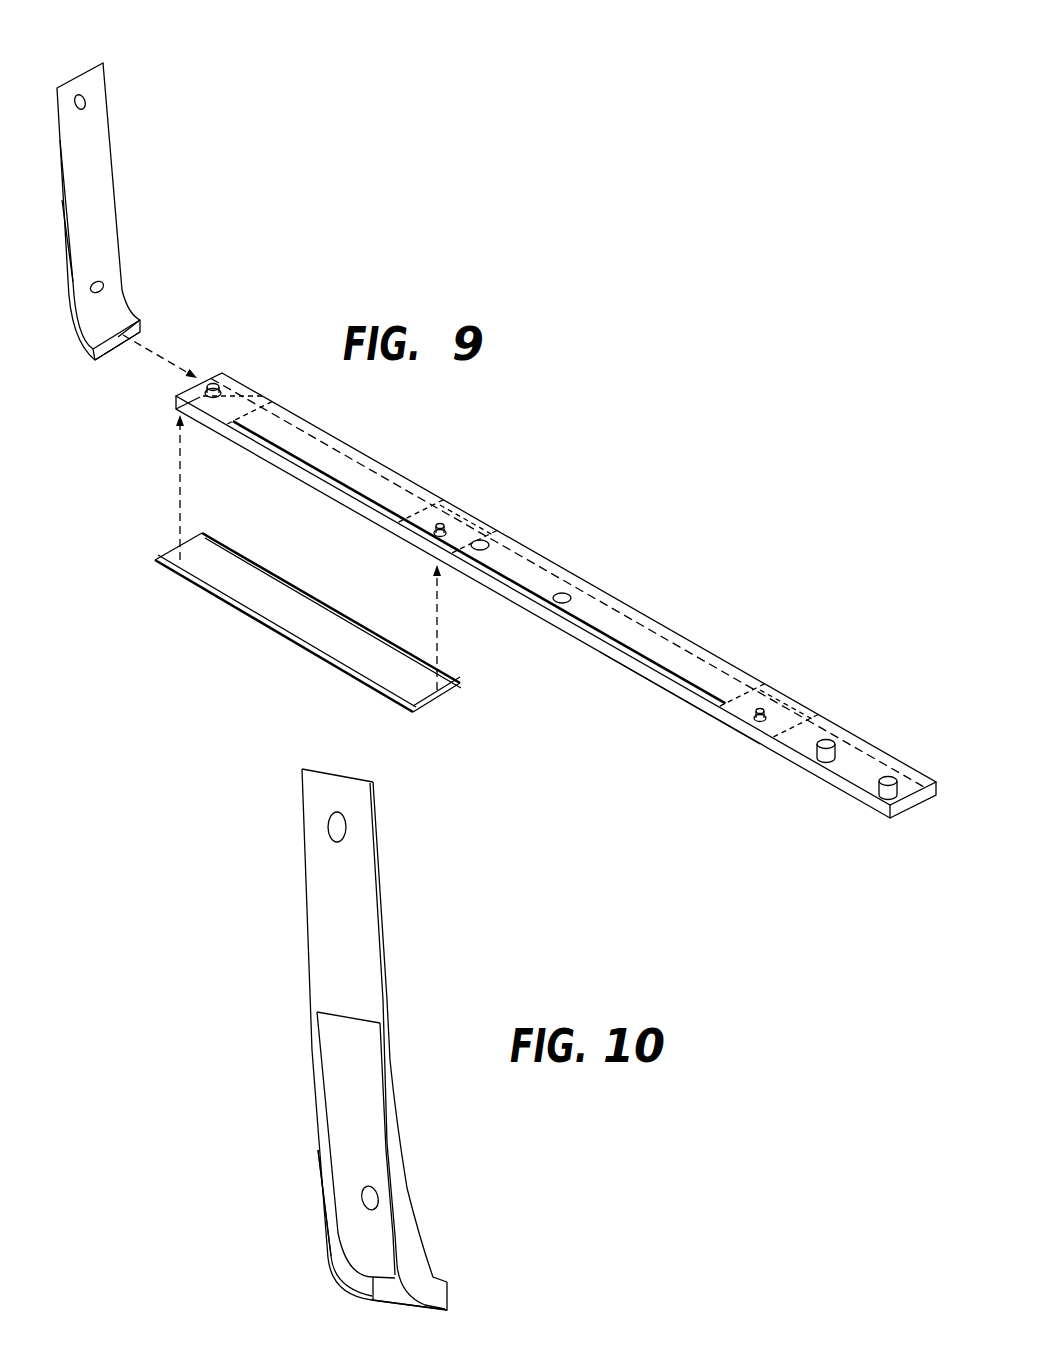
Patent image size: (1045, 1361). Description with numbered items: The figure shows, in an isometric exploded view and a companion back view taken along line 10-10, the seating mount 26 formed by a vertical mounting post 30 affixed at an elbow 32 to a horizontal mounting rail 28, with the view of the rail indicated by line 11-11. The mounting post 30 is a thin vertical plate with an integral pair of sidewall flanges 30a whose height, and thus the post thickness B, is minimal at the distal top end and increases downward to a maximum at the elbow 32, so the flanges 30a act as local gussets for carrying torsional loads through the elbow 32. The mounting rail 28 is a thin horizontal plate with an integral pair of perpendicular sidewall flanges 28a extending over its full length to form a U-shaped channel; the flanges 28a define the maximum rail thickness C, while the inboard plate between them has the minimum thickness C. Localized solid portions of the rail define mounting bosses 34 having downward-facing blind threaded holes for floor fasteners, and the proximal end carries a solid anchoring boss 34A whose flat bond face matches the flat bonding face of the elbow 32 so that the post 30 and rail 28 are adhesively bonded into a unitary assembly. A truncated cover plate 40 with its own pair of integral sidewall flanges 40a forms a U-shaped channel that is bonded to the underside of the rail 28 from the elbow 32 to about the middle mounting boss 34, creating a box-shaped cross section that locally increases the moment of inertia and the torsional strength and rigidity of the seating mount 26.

In FIG. 9, the section line 10- 10 is at (45, 62).
In FIG. 9, the section line 11- 11 is at (70, 478).
In FIG. 9, the seating mount 26 is at (530, 457).
In FIG. 9, the mounting rail 28 is at (612, 595).
In FIG. 9, the sidewall flanges 28a is at (658, 686).
In FIG. 9, the mounting post 30 is at (108, 157).
In FIG. 10, the mounting post 30 is at (385, 997).
In FIG. 9, the sidewall flanges 30a is at (70, 322).
In FIG. 10, the sidewall flanges 30a is at (323, 1208).
In FIG. 9, the elbow 32 is at (128, 310).
In FIG. 10, the elbow 32 is at (437, 1280).
In FIG. 9, the mounting boss 34 is at (463, 513).
In FIG. 9, the anchoring boss 34A is at (230, 372).
In FIG. 9, the cover plate 40 is at (298, 622).
In FIG. 9, the sidewall flanges 40a is at (212, 582).
In FIG. 9, the thickness B is at (90, 276).
In FIG. 10, the thickness B is at (357, 1143).
In FIG. 9, the thickness C is at (595, 597).